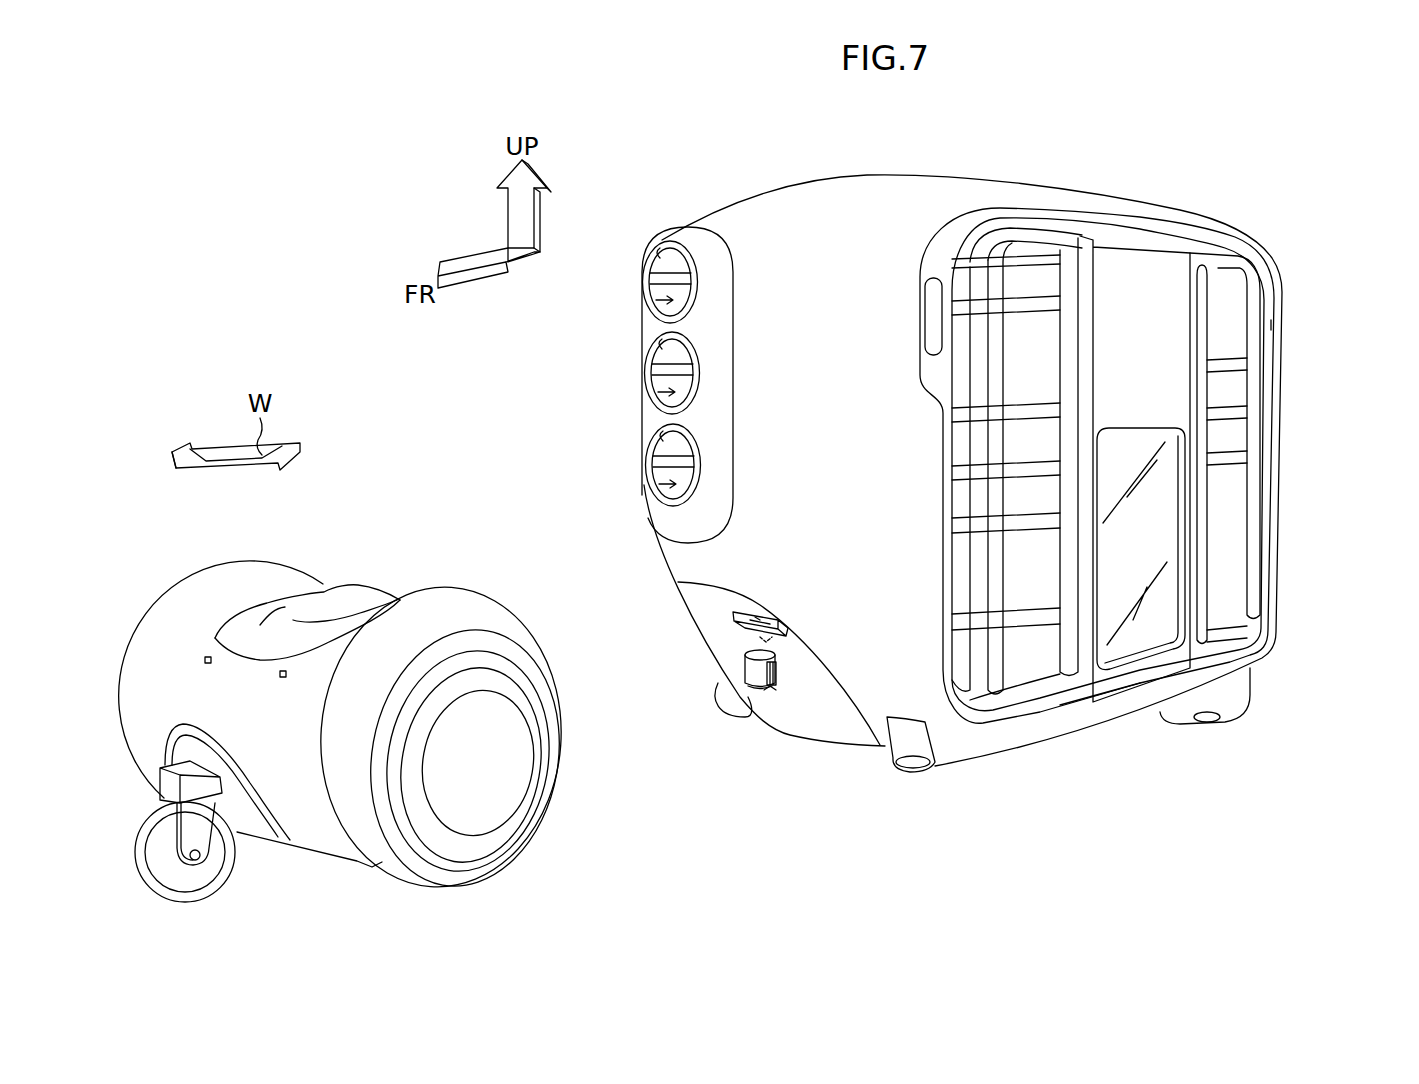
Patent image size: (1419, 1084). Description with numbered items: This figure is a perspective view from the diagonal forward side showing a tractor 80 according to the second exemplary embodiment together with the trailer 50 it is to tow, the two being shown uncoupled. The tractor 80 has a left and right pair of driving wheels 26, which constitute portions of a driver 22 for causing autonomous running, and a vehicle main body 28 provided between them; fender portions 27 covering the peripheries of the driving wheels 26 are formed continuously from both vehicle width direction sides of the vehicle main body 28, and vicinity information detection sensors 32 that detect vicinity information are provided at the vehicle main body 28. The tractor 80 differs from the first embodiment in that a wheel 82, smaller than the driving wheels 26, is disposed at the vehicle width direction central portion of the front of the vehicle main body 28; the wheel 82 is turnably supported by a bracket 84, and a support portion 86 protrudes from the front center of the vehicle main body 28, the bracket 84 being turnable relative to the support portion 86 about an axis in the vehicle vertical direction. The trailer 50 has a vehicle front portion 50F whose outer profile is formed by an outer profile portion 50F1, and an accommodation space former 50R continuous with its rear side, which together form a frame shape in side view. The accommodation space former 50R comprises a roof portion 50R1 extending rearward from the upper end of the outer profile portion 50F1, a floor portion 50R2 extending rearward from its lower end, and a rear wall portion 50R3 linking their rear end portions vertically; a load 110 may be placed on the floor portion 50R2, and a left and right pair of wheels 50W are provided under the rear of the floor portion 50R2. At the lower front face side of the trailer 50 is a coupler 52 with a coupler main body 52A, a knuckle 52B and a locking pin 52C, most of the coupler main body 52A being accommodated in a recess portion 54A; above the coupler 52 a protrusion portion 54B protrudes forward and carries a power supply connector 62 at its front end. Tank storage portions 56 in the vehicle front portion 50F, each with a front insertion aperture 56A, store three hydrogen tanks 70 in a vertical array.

The driver 22 is at (567, 802).
The driving wheels 26 is at (150, 789).
The fender portions 27 is at (213, 575).
The vehicle main body 28 is at (408, 595).
The vicinity information detection sensors 32 is at (205, 663).
The trailer 50 is at (1025, 160).
The vehicle front portion 50F is at (795, 153).
The outer profile portion 50F1 is at (752, 220).
The accommodation space former 50R is at (1120, 176).
The roof portion 50R1 is at (1150, 210).
The floor portion 50R2 is at (1110, 716).
The rear wall portion 50R3 is at (1283, 422).
The wheels 50W is at (1205, 722).
The coupler 52 is at (745, 668).
The coupler main body 52A is at (780, 655).
The knuckle 52B is at (753, 687).
The locking pin 52C is at (767, 640).
The recess portion 54A is at (768, 692).
The protrusion portion 54B is at (763, 617).
The tank storage portions 56 is at (614, 344).
The insertion aperture 56A is at (660, 262).
The power supply connector 62 is at (733, 617).
The hydrogen tanks 70 is at (660, 300).
The tractor 80 is at (387, 505).
The wheel 82 is at (183, 903).
The bracket 84 is at (205, 850).
The support portion 86 is at (207, 783).
The load 110 is at (1028, 662).